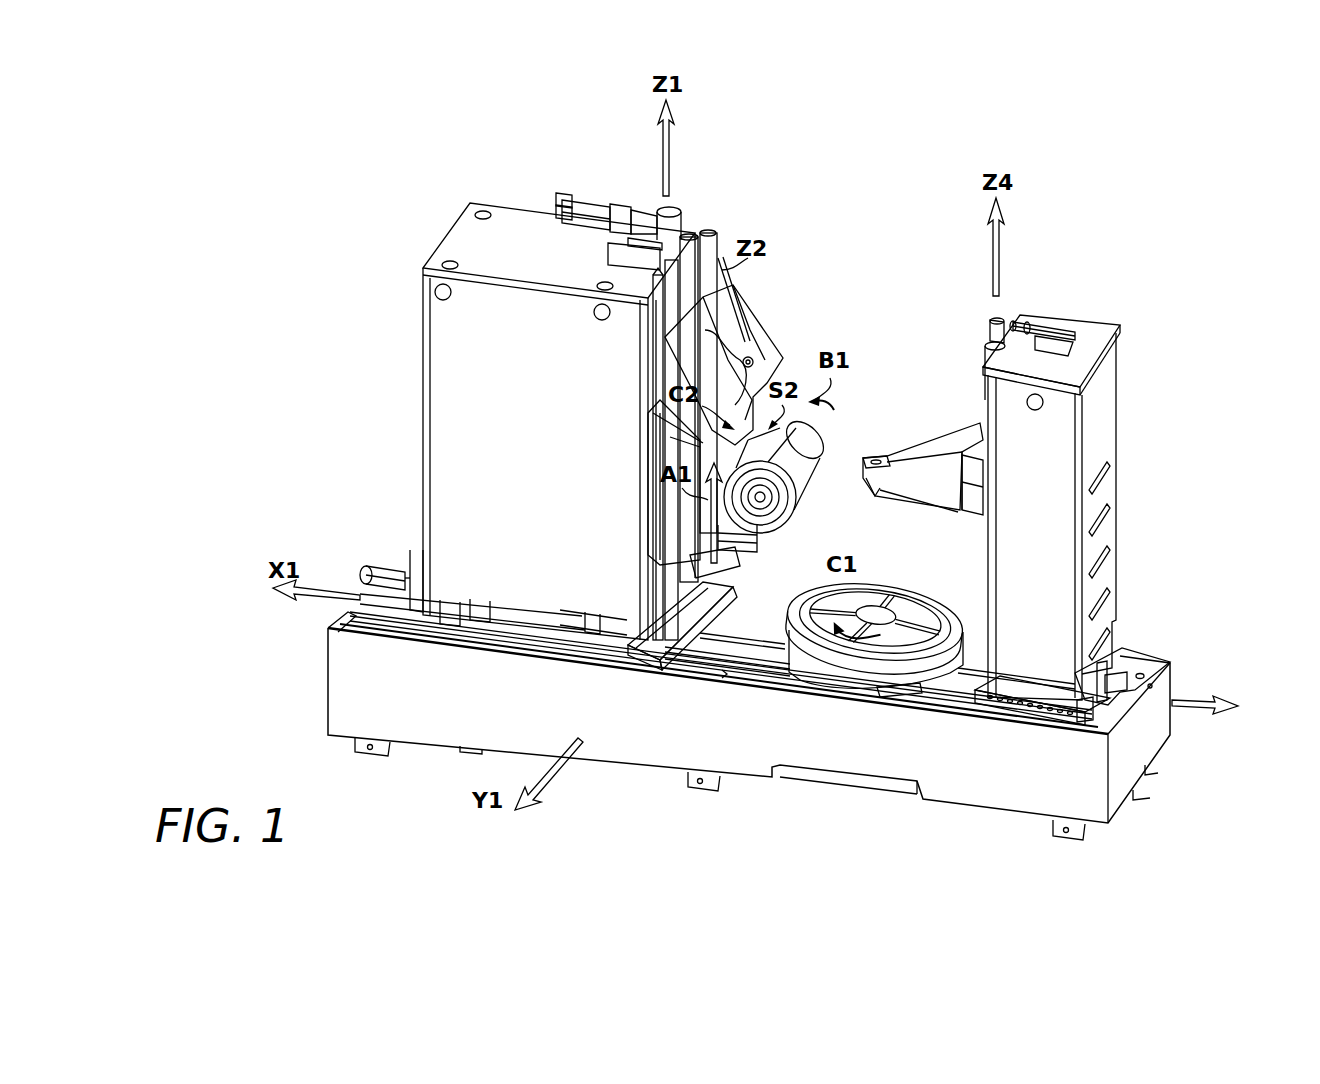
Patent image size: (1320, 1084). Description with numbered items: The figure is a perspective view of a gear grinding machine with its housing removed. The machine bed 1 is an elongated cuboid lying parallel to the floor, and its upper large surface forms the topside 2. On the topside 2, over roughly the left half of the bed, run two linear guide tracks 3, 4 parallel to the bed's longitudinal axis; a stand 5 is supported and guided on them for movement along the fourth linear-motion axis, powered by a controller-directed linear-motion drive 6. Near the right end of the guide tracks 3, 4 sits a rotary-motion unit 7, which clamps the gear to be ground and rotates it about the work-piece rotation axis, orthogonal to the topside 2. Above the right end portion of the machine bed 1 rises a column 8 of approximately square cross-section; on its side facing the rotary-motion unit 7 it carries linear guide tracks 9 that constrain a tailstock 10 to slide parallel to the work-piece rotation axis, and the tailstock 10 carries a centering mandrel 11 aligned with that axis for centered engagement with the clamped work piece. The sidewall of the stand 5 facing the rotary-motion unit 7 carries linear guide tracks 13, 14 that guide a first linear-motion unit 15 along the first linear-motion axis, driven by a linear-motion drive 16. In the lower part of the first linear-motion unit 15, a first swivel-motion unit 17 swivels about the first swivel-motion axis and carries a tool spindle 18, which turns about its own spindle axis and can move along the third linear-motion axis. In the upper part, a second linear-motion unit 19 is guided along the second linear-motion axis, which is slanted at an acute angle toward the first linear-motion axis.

The machine bed 1 is at (616, 794).
The topside 2 is at (1137, 673).
The linear guide track 3 is at (722, 675).
The linear guide track 4 is at (764, 638).
The stand 5 is at (412, 397).
The linear-motion drive 6 is at (378, 570).
The rotary-motion unit 7 is at (903, 600).
The column 8 is at (1145, 418).
The linear guide tracks 9 is at (984, 393).
The tailstock 10 is at (930, 455).
The centering mandrel 11 is at (870, 490).
The linear guide track 13 is at (650, 298).
The linear guide track 14 is at (690, 237).
The first linear-motion unit 15 is at (668, 526).
The linear-motion drive 16 is at (590, 205).
The first swivel-motion unit 17 is at (725, 500).
The tool spindle 18 is at (806, 465).
The second linear-motion unit 19 is at (762, 370).